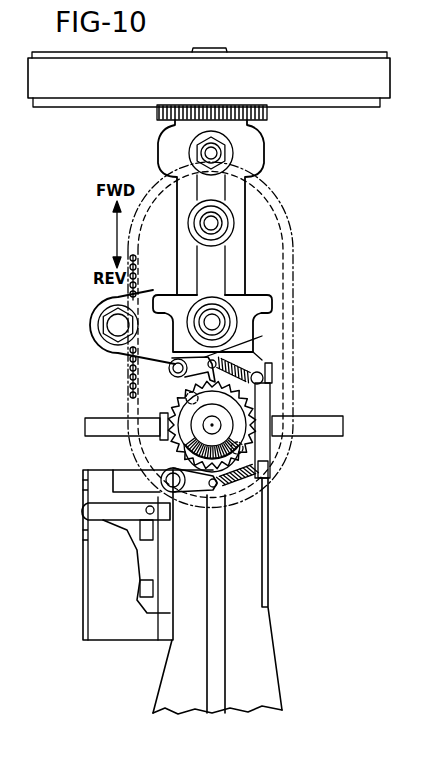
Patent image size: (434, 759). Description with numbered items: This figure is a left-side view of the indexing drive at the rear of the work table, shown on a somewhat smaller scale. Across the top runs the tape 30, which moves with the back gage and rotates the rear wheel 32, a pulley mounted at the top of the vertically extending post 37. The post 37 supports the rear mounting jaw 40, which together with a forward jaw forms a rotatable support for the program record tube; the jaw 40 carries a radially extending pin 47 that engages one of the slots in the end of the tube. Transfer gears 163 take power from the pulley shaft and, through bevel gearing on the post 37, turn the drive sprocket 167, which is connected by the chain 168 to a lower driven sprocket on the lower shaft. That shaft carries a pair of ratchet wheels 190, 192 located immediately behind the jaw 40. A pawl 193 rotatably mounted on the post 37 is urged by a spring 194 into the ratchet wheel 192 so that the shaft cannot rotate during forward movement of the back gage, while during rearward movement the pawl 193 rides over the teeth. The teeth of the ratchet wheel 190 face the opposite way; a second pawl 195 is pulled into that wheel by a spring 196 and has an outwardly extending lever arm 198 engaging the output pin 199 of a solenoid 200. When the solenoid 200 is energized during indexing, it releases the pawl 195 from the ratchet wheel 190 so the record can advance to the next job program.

The tape 30 is at (262, 62).
The rear wheel 32 is at (331, 53).
The post 37 is at (265, 143).
The rear mounting jaw 40 is at (243, 433).
The pin 47 is at (257, 425).
The transfer gears 163 is at (157, 113).
The drive sprocket 167 is at (270, 192).
The chain 168 is at (130, 288).
The ratchet wheel 190 is at (258, 480).
The ratchet wheel 192 is at (170, 410).
The pawl 193 is at (200, 364).
The spring 194 is at (255, 355).
The pawl 195 is at (200, 492).
The spring 196 is at (256, 491).
The lever arm 198 is at (130, 473).
The output pin 199 is at (115, 497).
The solenoid 200 is at (97, 565).